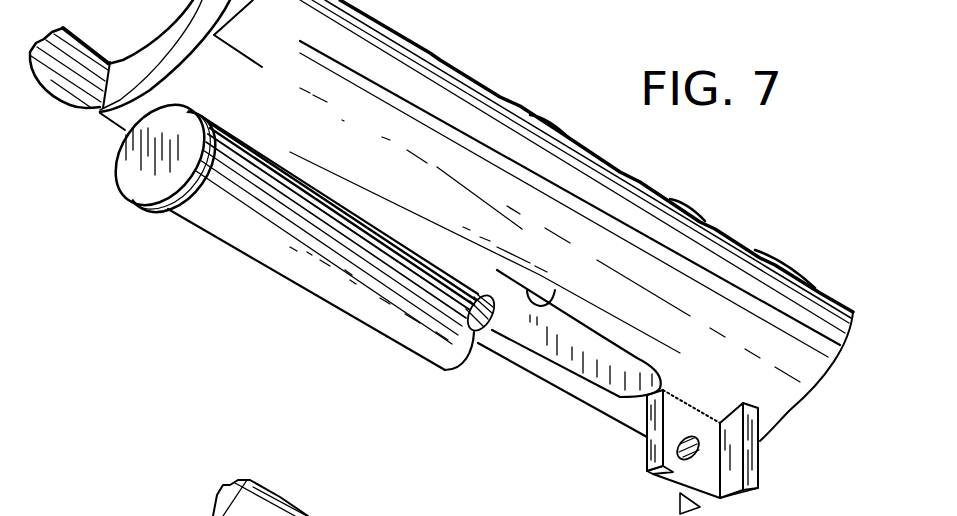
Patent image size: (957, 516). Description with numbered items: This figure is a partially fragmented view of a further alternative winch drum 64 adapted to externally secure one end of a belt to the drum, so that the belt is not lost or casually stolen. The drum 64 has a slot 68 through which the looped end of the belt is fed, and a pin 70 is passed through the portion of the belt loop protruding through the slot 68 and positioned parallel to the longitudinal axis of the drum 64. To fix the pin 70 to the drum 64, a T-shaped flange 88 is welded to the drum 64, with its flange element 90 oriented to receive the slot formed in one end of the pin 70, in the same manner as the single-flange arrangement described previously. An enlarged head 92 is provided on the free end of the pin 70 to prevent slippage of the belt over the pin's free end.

The winch drum 64 is at (788, 395).
The slot 68 is at (555, 290).
The pin 70 is at (318, 291).
The "T" shaped flange 88 is at (762, 464).
The flange element 90 is at (645, 455).
The enlarged head 92 is at (120, 172).